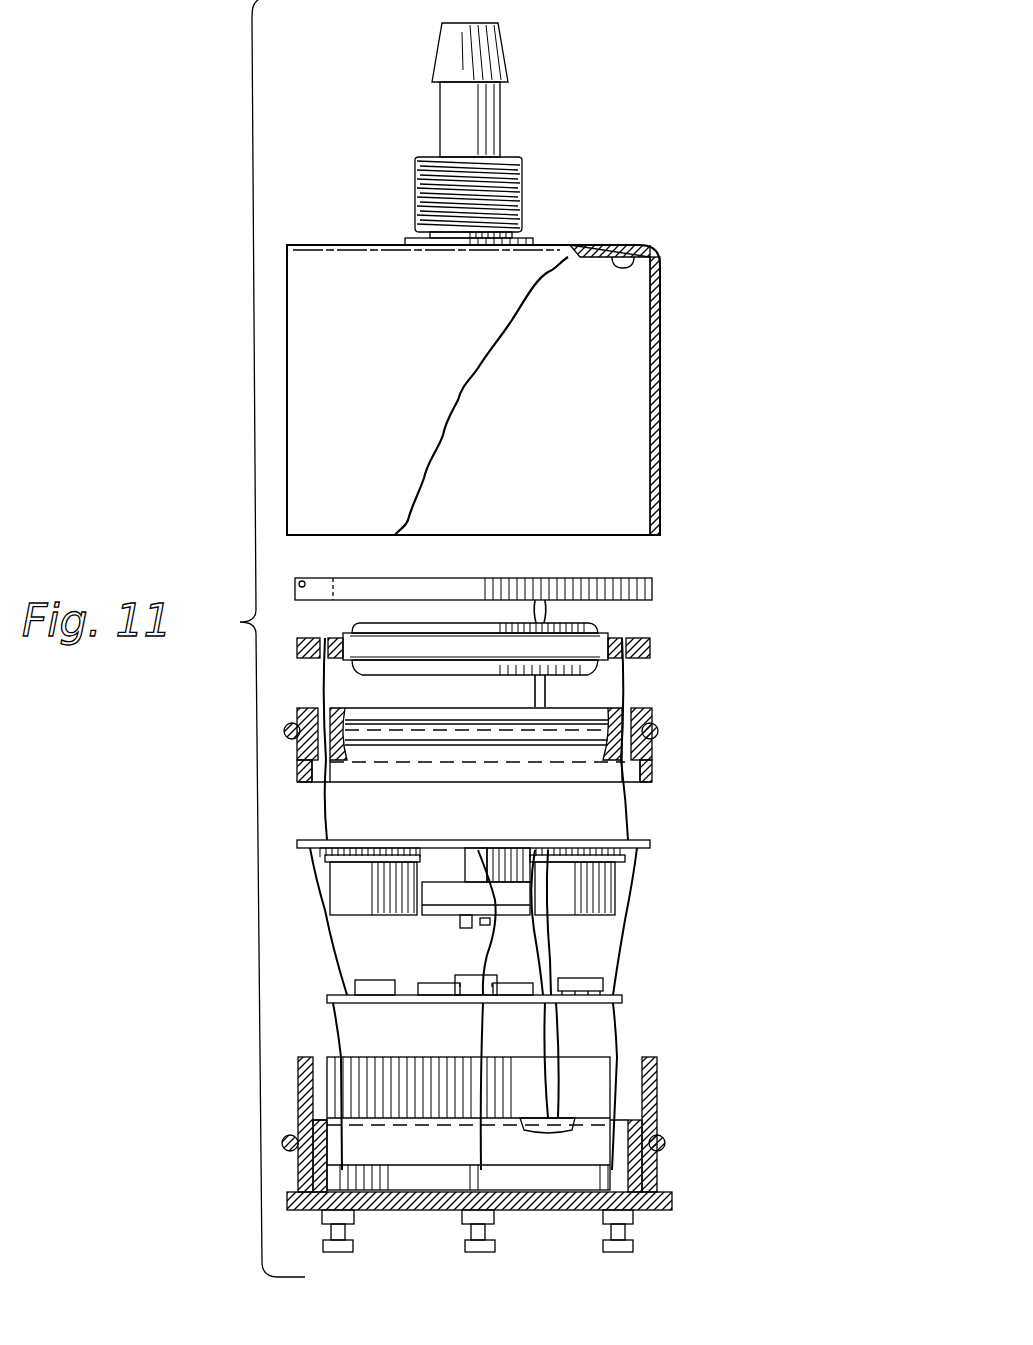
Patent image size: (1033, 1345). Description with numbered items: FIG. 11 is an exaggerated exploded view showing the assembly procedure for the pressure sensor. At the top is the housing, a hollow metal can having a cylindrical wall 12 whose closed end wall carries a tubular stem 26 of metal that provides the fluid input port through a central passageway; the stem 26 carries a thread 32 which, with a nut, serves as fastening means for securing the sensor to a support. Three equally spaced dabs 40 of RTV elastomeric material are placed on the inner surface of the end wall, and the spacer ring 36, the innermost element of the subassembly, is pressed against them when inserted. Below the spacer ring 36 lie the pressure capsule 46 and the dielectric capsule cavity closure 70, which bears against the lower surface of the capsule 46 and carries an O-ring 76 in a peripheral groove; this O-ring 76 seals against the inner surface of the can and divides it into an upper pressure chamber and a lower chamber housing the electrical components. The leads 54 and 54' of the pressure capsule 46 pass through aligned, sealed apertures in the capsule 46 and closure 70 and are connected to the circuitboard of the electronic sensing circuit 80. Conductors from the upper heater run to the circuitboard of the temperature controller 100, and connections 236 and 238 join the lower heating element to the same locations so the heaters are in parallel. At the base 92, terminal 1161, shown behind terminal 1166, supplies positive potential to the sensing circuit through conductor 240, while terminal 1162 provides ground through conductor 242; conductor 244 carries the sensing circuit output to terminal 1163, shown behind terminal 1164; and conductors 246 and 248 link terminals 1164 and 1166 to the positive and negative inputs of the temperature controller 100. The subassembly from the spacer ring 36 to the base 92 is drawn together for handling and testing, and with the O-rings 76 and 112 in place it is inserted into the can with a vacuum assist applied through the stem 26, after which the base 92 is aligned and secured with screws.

The tubular stem 26 is at (490, 119).
The thread 32 is at (440, 187).
The dabs of elastomeric material 40 is at (623, 262).
The cylindrical wall 12 is at (499, 370).
The spacer ring 36 is at (652, 590).
The pressure capsule 46 is at (652, 650).
The O-ring 76 is at (657, 733).
The capsule cavity closure 70 is at (497, 747).
The electrical lead 54' is at (355, 739).
The electrical lead 54 is at (652, 739).
The electronic sensing circuit 80 is at (652, 843).
The electrical conductor 242 is at (492, 940).
The electrical conductor 244 is at (628, 935).
The electrical conductor 240 is at (330, 937).
The temperature controller 100 is at (625, 1000).
The electrical conductor 248 is at (332, 1040).
The electrical conductor 246 is at (622, 1042).
The electrical connection 238 is at (555, 1048).
The electrical connection 236 is at (545, 1095).
The O-ring 112 is at (666, 1143).
The base 92 is at (507, 1133).
The terminal 1161 is at (360, 1215).
The terminal 1162 is at (470, 1220).
The terminal 1163 is at (600, 1212).
The terminal 1164 is at (625, 1248).
The terminal 1166 is at (340, 1255).